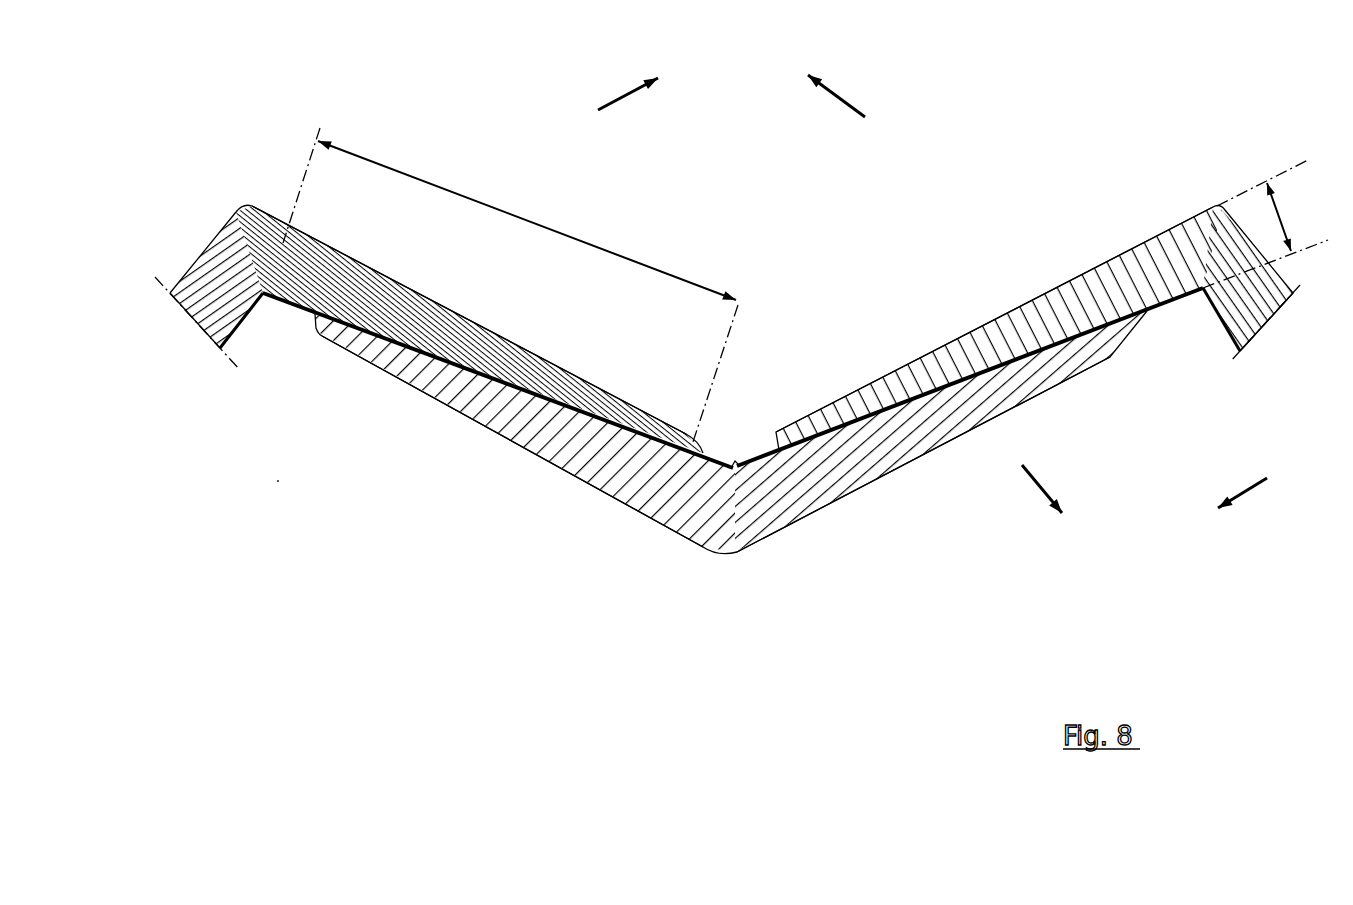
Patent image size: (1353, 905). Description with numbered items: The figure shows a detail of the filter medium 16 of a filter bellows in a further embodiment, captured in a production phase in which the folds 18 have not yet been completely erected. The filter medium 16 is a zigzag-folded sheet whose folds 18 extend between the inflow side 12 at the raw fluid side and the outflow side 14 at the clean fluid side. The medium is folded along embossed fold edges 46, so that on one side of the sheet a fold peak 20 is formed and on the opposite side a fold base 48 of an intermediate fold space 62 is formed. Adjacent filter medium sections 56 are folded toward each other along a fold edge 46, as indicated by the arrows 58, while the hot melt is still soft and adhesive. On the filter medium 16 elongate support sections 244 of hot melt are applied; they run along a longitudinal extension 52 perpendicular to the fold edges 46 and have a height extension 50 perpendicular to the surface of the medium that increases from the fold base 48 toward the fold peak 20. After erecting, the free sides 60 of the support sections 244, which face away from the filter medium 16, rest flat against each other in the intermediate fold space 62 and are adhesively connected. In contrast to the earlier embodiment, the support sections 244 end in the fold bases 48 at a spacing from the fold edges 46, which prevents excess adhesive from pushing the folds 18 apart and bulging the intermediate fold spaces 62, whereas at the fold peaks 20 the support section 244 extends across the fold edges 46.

The inflow side 12 is at (492, 84).
The outflow side 14 is at (573, 625).
The filter medium 16 is at (222, 350).
The folds 18 is at (778, 292).
The fold peak 20 is at (236, 228).
The fold edges 46 is at (268, 300).
The fold base 48 is at (260, 322).
The height extension 50 is at (1258, 205).
The longitudinal extension 52 is at (527, 222).
The filter medium sections 56 is at (417, 345).
The arrows 58 is at (630, 95).
The free sides 60 is at (582, 380).
The intermediate fold space 62 is at (714, 265).
The support sections 244 is at (342, 258).